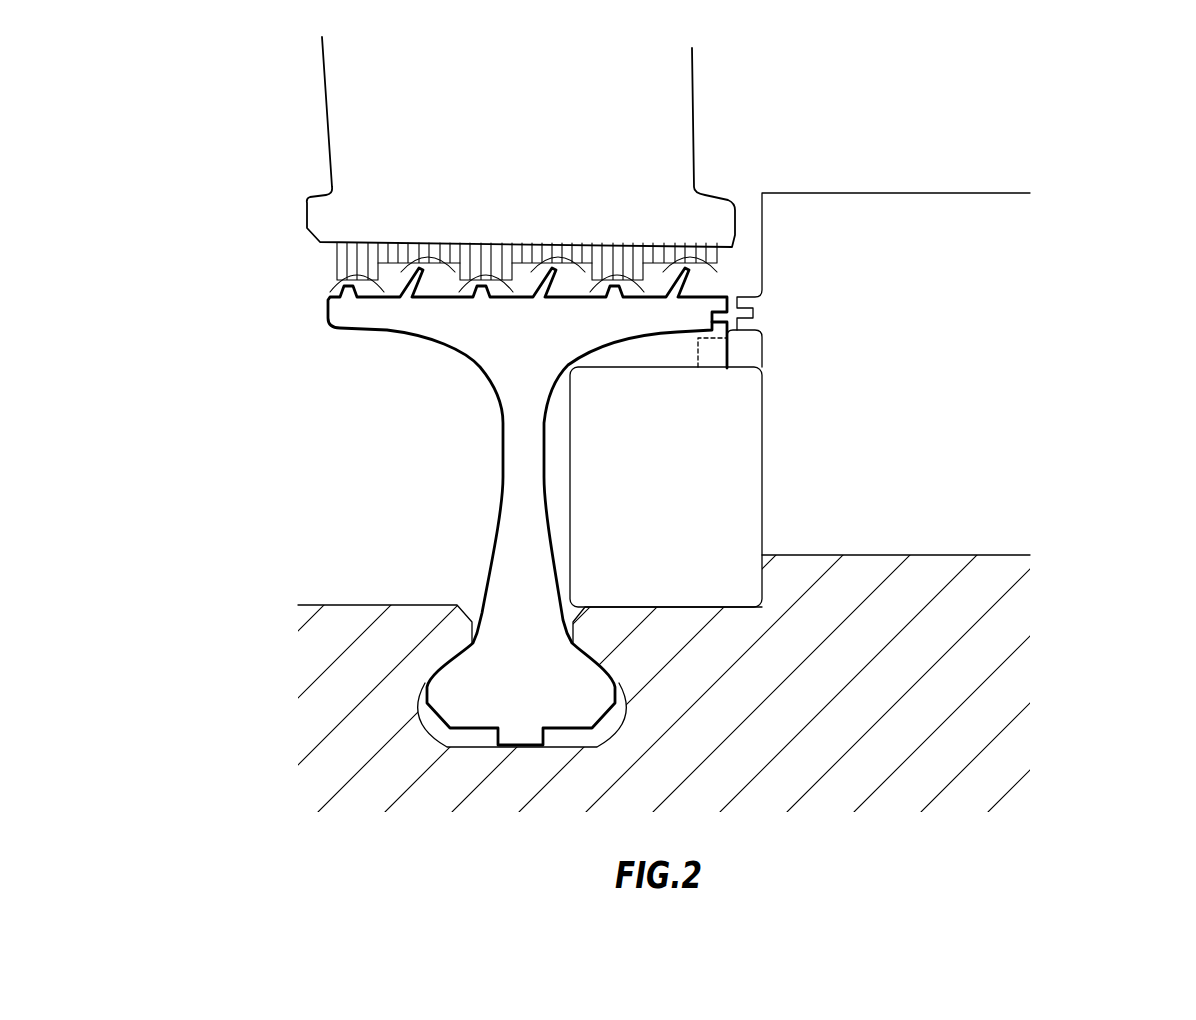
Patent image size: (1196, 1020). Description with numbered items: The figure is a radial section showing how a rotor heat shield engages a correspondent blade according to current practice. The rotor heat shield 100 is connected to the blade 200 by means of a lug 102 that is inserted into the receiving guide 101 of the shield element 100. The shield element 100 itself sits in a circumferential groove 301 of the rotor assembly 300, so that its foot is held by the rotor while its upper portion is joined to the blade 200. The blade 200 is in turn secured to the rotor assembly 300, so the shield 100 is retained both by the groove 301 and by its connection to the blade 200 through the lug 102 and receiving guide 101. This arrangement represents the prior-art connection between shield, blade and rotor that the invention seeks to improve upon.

The rotor heat shield 100 is at (521, 348).
The receiving guide 101 is at (693, 361).
The lug 102 is at (743, 352).
The blade 200 is at (927, 330).
The rotor assembly 300 is at (947, 615).
The circumferential groove 301 is at (417, 717).